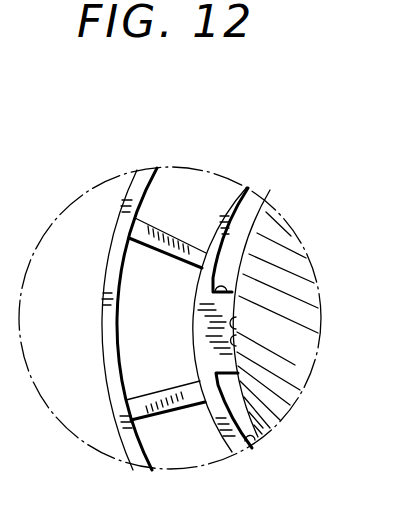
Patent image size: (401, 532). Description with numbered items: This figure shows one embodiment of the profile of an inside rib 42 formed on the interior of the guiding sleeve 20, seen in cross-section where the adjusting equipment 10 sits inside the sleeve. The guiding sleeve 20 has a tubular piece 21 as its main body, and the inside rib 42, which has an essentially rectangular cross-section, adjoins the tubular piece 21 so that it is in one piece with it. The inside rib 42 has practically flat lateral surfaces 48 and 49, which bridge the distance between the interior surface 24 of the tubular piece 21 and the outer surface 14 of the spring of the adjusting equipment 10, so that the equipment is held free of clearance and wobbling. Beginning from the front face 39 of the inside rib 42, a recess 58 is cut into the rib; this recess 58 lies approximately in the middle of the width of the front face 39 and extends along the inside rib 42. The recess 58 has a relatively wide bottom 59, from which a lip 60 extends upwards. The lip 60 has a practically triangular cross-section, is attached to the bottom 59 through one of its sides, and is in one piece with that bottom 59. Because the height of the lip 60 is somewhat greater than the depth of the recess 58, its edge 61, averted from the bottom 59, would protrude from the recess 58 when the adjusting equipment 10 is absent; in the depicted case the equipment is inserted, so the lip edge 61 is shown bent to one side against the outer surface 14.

The adjusting equipment 10 is at (304, 386).
The outer surface of the spring 14 is at (288, 236).
The guiding sleeve 20 is at (95, 240).
The tubular piece 21 is at (220, 224).
The interior surface of the tubular piece 24 is at (248, 438).
The front face of the inside rib 39 is at (238, 308).
The inside rib 42 is at (249, 228).
The lateral surface of the inside rib 48 is at (212, 278).
The lateral surface of the inside rib 49 is at (282, 418).
The recess 58 is at (204, 343).
The bottom of the recess 59 is at (224, 323).
The lip 60 is at (238, 323).
The edge of the lip 61 is at (238, 342).